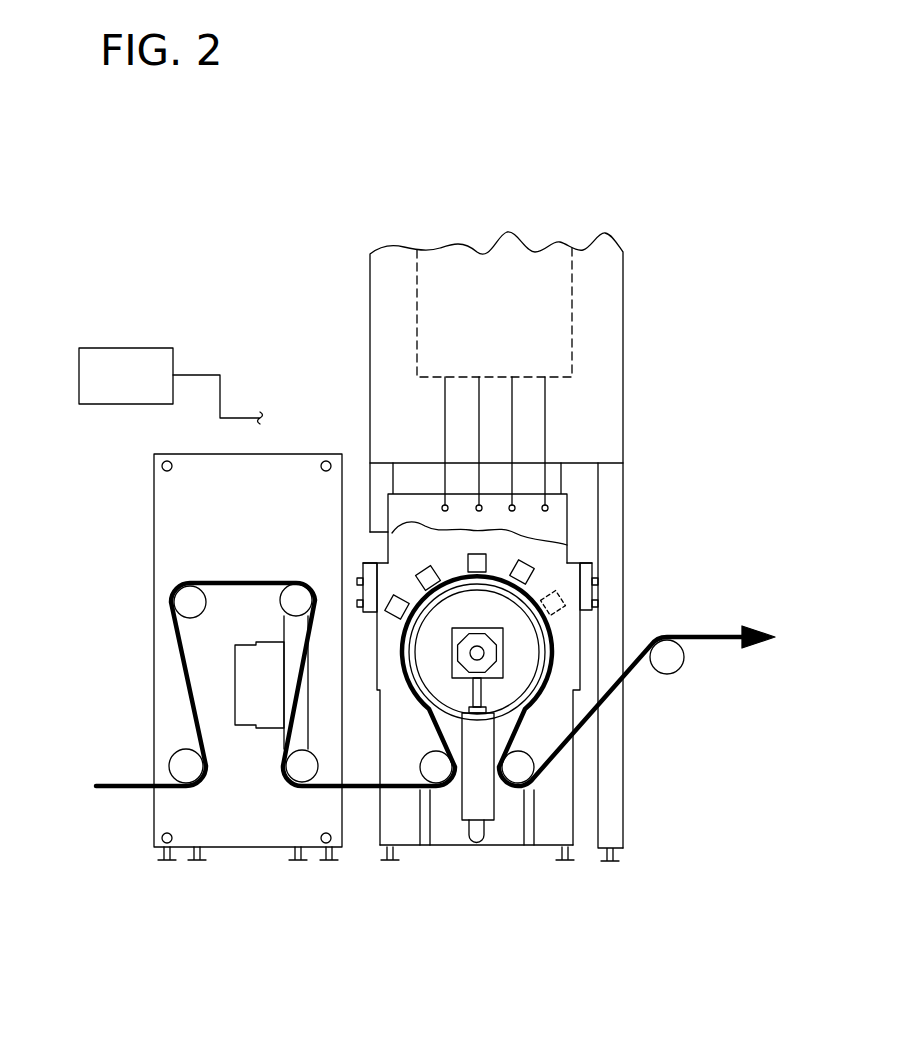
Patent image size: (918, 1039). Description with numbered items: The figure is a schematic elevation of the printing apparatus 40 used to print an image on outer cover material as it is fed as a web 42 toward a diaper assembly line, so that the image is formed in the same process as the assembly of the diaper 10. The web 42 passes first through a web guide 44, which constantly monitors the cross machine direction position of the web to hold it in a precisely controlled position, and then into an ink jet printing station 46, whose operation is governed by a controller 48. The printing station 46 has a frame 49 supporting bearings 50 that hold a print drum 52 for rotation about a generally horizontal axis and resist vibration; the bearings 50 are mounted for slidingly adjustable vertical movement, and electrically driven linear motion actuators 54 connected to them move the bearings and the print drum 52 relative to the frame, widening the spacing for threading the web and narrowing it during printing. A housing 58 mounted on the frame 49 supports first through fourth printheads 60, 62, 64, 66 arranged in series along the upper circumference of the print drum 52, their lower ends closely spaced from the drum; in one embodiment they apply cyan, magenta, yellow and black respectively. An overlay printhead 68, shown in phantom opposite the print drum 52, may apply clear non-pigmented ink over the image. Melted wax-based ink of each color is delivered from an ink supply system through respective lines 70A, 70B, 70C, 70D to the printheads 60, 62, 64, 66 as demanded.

The diaper 10 is at (573, 318).
The apparatus 40 is at (282, 280).
The web 42 is at (127, 800).
The web guide 44 is at (138, 555).
The ink jet printing station 46 is at (488, 183).
The controller 48 is at (121, 348).
The frame 49 is at (625, 510).
The bearings 50 is at (492, 652).
The print drum 52 is at (447, 710).
The linear motion actuators 54 is at (470, 806).
The housing 58 is at (553, 495).
The first printhead 60 is at (397, 600).
The second printhead 62 is at (428, 567).
The third printhead 64 is at (490, 555).
The fourth printhead 66 is at (534, 570).
The overlay printhead 68 is at (565, 600).
The ink supply line 70A is at (445, 440).
The ink supply line 70B is at (445, 405).
The ink supply line 70C is at (513, 410).
The ink supply line 70D is at (545, 426).